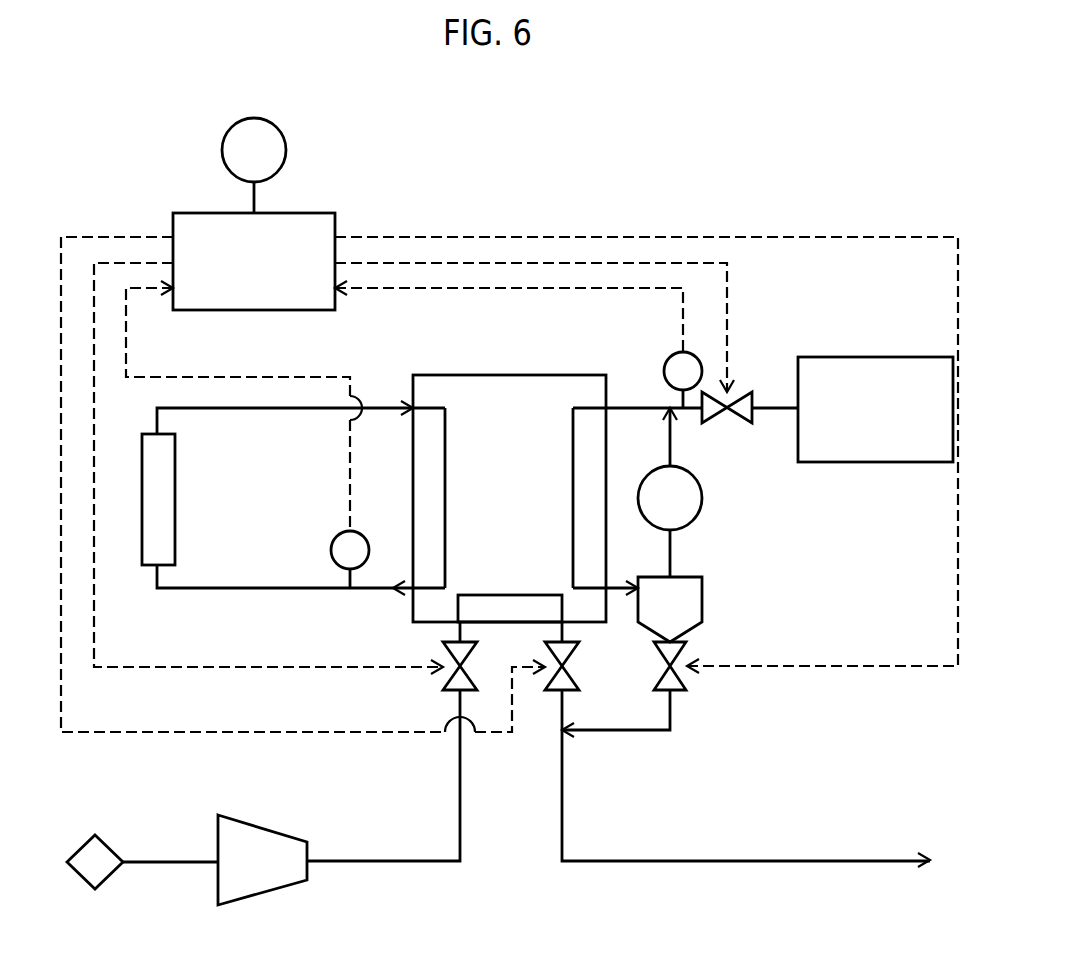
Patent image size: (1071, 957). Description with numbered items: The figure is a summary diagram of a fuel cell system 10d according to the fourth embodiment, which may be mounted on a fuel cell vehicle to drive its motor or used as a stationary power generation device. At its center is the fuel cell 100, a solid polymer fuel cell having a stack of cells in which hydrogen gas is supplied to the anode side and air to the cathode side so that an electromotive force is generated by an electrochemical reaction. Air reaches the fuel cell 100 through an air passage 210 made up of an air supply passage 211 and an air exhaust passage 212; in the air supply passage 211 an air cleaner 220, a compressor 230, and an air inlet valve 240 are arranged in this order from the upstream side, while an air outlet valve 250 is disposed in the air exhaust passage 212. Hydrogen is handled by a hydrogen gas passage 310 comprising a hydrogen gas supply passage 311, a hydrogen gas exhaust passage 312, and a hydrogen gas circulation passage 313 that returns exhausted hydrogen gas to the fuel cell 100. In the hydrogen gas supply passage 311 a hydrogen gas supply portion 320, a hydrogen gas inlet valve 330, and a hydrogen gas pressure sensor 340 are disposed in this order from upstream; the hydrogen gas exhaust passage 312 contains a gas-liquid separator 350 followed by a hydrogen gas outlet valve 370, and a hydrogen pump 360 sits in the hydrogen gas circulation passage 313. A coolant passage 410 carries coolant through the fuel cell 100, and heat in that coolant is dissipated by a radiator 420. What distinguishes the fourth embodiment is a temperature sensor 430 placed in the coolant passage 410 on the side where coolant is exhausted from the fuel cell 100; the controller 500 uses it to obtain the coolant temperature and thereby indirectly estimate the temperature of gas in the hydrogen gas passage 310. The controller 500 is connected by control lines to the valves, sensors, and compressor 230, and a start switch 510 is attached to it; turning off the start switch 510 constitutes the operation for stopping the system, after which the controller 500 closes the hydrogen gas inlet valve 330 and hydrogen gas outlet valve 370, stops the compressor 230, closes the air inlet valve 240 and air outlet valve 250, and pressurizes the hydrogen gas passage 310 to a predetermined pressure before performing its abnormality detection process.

The fuel cell system 10d is at (867, 138).
The fuel cell 100 is at (524, 375).
The air passage 210 is at (618, 744).
The air supply passage 211 is at (460, 830).
The air exhaust passage 212 is at (641, 846).
The air cleaner 220 is at (107, 845).
The compressor 230 is at (273, 831).
The air inlet valve 240 is at (447, 690).
The air outlet valve 250 is at (553, 692).
The hydrogen gas passage 310 is at (716, 501).
The hydrogen gas supply passage 311 is at (780, 412).
The hydrogen gas exhaust passage 312 is at (612, 588).
The hydrogen gas circulation passage 313 is at (672, 541).
The hydrogen gas supply portion 320 is at (880, 357).
The hydrogen gas inlet valve 330 is at (750, 393).
The hydrogen gas pressure sensor 340 is at (667, 358).
The gas-liquid separator 350 is at (702, 606).
The hydrogen pump 360 is at (699, 486).
The hydrogen gas outlet valve 370 is at (682, 691).
The coolant passage 410 is at (375, 405).
The radiator 420 is at (176, 506).
The temperature sensor 430 is at (336, 538).
The controller 500 is at (300, 213).
The start switch 510 is at (278, 128).